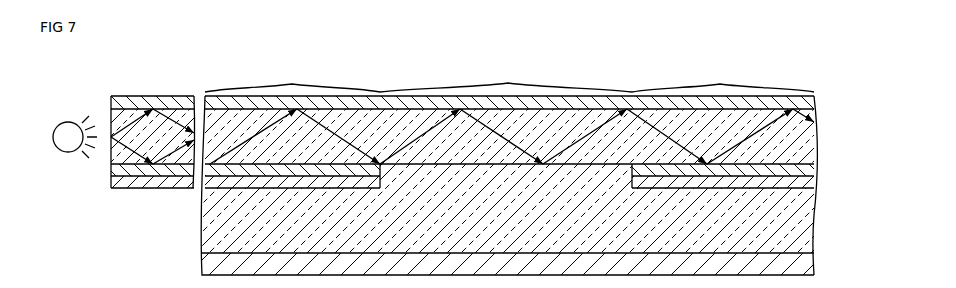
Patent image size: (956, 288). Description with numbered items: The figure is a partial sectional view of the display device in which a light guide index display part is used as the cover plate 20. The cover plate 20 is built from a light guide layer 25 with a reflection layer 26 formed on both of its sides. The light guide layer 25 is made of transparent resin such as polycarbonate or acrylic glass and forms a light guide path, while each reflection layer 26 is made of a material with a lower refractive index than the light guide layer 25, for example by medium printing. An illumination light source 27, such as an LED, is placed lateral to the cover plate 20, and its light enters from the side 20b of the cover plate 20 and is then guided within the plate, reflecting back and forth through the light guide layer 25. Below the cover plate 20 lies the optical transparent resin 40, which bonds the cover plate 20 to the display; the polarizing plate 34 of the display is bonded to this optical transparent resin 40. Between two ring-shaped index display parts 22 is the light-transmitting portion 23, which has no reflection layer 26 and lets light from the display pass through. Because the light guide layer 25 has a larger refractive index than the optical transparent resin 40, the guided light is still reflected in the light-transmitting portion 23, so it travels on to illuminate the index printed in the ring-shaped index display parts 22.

The cover plate 20 is at (215, 94).
The side of the cover plate 20b is at (111, 130).
The ring-shaped index display part 22 is at (509, 78).
The light-transmitting portion 23 is at (506, 78).
The light guide layer 25 is at (112, 155).
The reflection layer 26 is at (112, 97).
The illumination light source 27 is at (63, 122).
The polarizing plate 34 is at (812, 258).
The optical transparent resin 40 is at (812, 222).